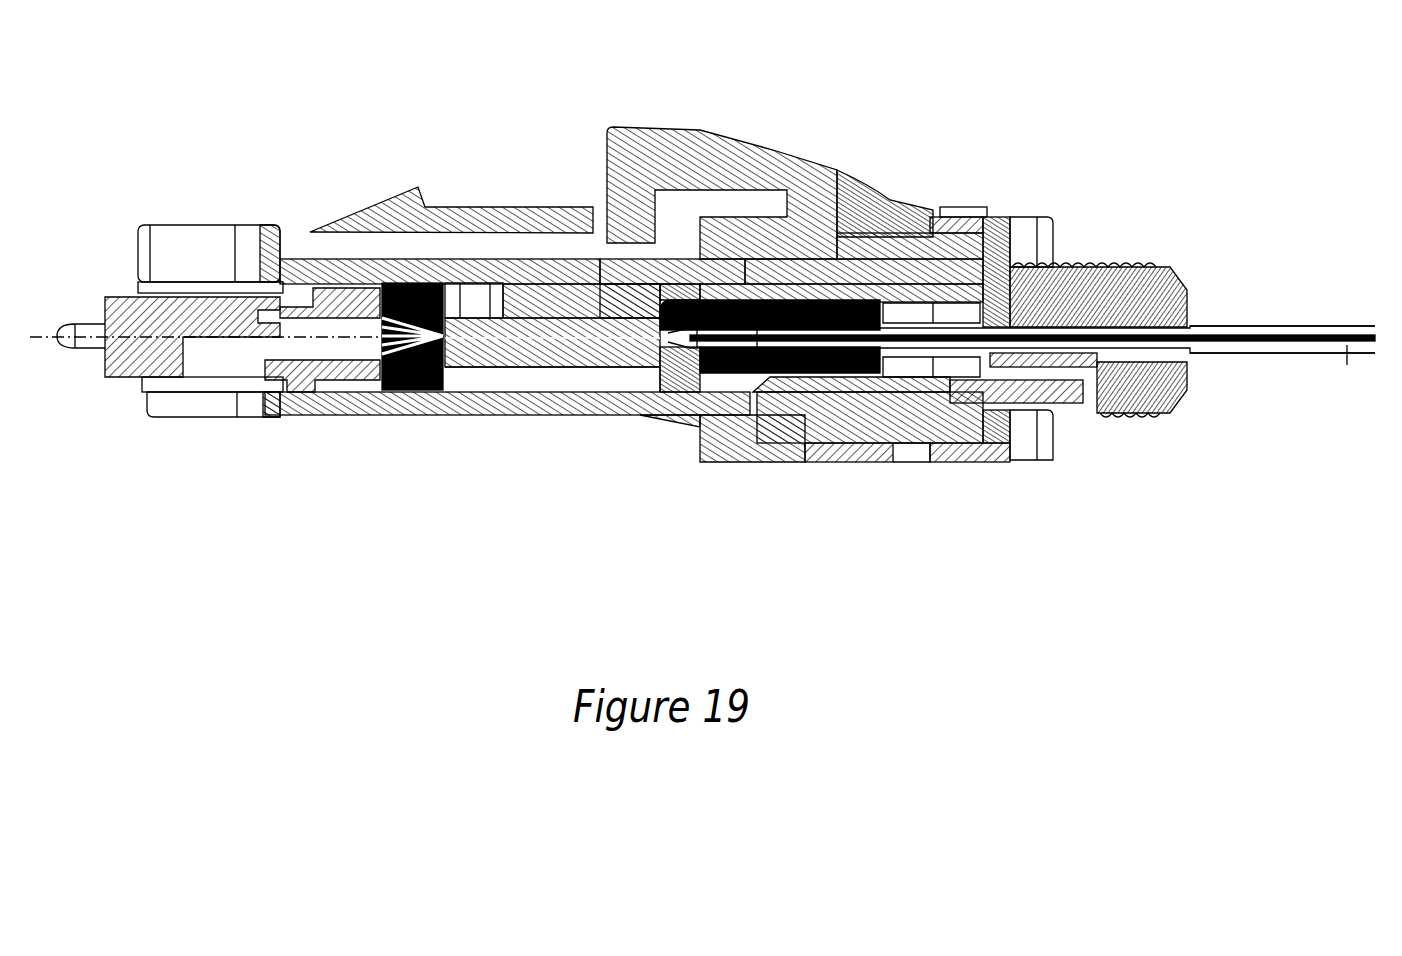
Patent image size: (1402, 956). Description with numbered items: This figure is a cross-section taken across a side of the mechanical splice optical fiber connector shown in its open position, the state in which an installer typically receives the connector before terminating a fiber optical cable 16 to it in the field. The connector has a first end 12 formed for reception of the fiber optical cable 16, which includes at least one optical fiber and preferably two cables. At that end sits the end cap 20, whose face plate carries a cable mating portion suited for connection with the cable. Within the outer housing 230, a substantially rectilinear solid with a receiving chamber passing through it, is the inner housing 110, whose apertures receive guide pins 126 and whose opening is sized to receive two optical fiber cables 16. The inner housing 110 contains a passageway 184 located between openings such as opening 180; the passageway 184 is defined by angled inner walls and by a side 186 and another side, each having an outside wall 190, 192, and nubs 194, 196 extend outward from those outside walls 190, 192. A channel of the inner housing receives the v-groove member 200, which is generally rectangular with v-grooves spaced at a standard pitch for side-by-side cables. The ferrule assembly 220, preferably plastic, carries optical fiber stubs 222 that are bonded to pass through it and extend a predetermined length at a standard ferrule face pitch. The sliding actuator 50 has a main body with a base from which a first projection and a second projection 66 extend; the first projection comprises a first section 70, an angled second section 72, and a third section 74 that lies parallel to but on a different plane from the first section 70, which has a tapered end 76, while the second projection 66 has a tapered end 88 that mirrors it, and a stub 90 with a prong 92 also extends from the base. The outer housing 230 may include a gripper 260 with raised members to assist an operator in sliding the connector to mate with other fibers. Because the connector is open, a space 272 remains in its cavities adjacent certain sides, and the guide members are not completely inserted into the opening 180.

The first end 12 is at (1190, 325).
The fiber optical cable 16 is at (1240, 326).
The end cap 20 is at (1100, 267).
The sliding actuator 50 is at (1010, 217).
The second projection 66 is at (1000, 463).
The first section 70 is at (870, 330).
The second section 72 is at (705, 300).
The third section 74 is at (640, 272).
The tapered end 76 is at (790, 330).
The tapered end 88 is at (823, 462).
The stub 90 is at (1087, 413).
The prong 92 is at (1043, 413).
The inner housing 110 is at (412, 285).
The guide pins 126 is at (75, 323).
The opening 180 is at (887, 462).
The passageway 184 is at (900, 300).
The side 186 is at (810, 330).
The outside wall 190 is at (850, 330).
The outside wall 192 is at (943, 463).
The nub 194 is at (760, 320).
The nub 196 is at (750, 392).
The v-groove member 200 is at (490, 318).
The ferrule assembly 220 is at (183, 317).
The optical fiber stubs 222 is at (330, 343).
The outer housing 230 is at (423, 415).
The gripper 260 is at (650, 205).
The space 272 is at (472, 295).